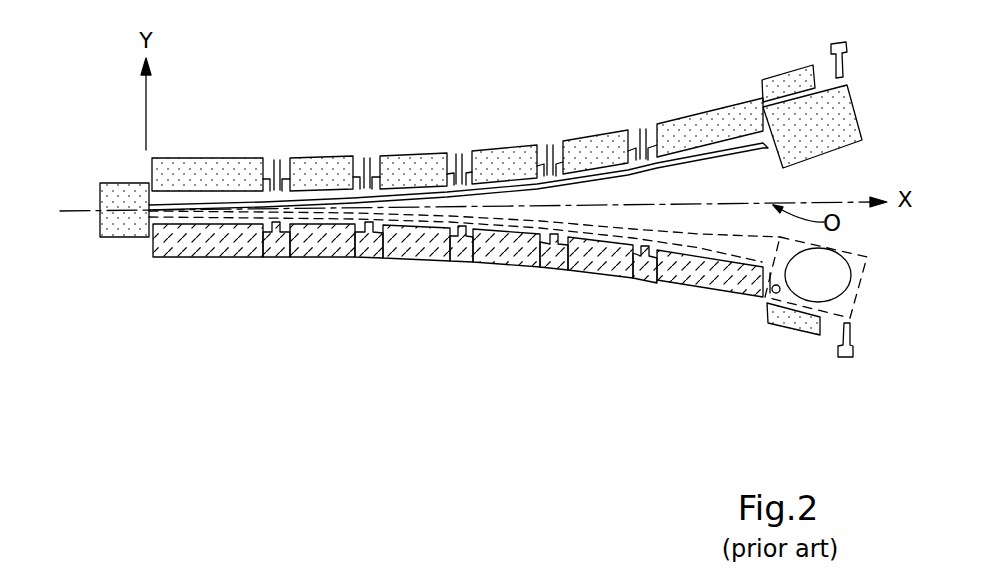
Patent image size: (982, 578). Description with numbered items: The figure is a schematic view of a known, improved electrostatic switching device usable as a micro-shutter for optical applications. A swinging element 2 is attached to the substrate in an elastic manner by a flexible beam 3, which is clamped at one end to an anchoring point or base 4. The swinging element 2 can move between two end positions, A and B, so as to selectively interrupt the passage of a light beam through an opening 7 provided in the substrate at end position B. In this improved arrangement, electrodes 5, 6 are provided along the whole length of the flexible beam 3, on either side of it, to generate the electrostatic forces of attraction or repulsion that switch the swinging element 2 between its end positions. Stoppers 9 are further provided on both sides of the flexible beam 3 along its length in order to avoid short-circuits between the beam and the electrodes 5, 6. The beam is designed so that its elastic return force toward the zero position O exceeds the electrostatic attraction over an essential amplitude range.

The swinging element 2 is at (846, 102).
The flexible beam 3 is at (687, 158).
The anchoring point 4 is at (126, 233).
The electrode 5 is at (393, 160).
The electrode 6 is at (507, 253).
The opening 7 is at (840, 273).
The stopper 9 is at (368, 247).